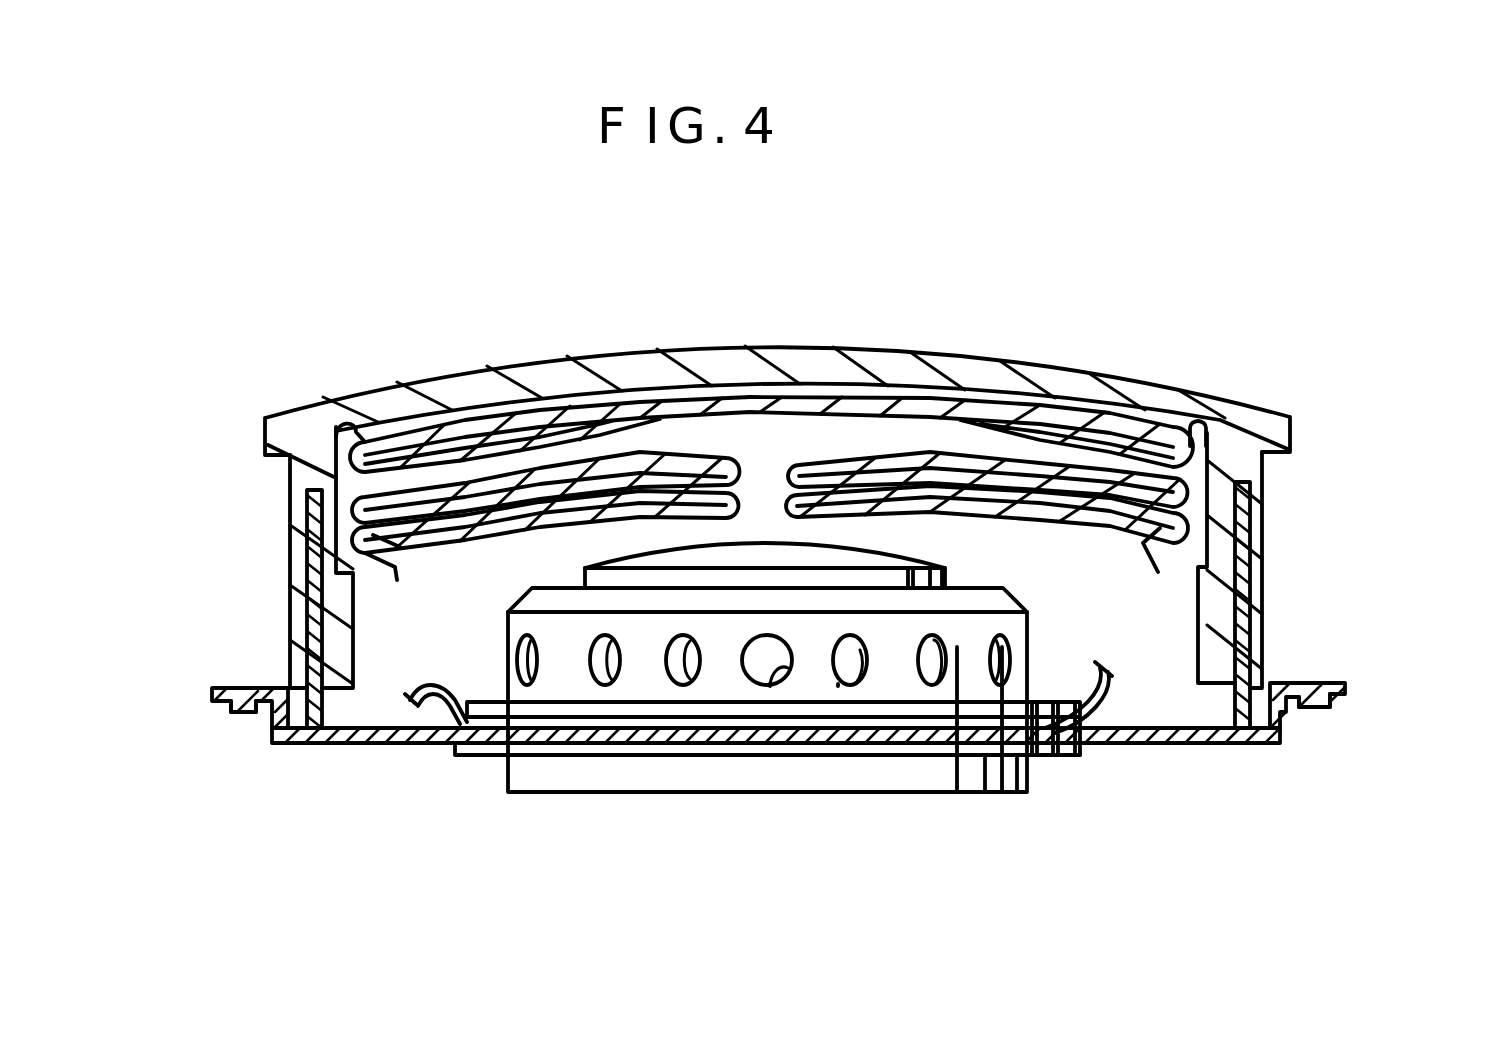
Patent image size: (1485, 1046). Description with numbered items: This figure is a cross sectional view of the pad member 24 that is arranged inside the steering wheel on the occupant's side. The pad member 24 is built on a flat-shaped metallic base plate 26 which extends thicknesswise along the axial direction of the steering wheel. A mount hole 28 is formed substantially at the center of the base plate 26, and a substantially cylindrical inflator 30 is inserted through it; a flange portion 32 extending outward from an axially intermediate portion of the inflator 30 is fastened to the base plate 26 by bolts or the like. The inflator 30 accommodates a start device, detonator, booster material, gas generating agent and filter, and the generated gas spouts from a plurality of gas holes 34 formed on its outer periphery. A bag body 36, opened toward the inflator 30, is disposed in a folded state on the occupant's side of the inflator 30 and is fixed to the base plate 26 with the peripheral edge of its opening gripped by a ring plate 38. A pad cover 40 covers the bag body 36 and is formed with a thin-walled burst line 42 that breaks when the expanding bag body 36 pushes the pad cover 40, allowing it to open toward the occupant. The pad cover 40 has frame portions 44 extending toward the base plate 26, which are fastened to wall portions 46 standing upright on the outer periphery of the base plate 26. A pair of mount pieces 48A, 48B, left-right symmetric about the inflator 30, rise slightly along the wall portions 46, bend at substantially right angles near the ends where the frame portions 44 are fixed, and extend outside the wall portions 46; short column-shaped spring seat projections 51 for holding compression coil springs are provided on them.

The pad member 24 is at (868, 285).
The base plate 26 is at (1165, 745).
The mount hole 28 is at (985, 795).
The inflator 30 is at (718, 793).
The flange portion 32 is at (897, 758).
The gas holes 34 is at (838, 683).
The bag body 36 is at (955, 410).
The ring plate 38 is at (470, 700).
The pad cover 40 is at (618, 365).
The burst line 42 is at (358, 430).
The frame portions 44 is at (1262, 525).
The wall portions 46 is at (1243, 578).
The mount piece 48A is at (210, 698).
The mount piece 48B is at (1345, 688).
The spring seat projections 51 is at (245, 715).